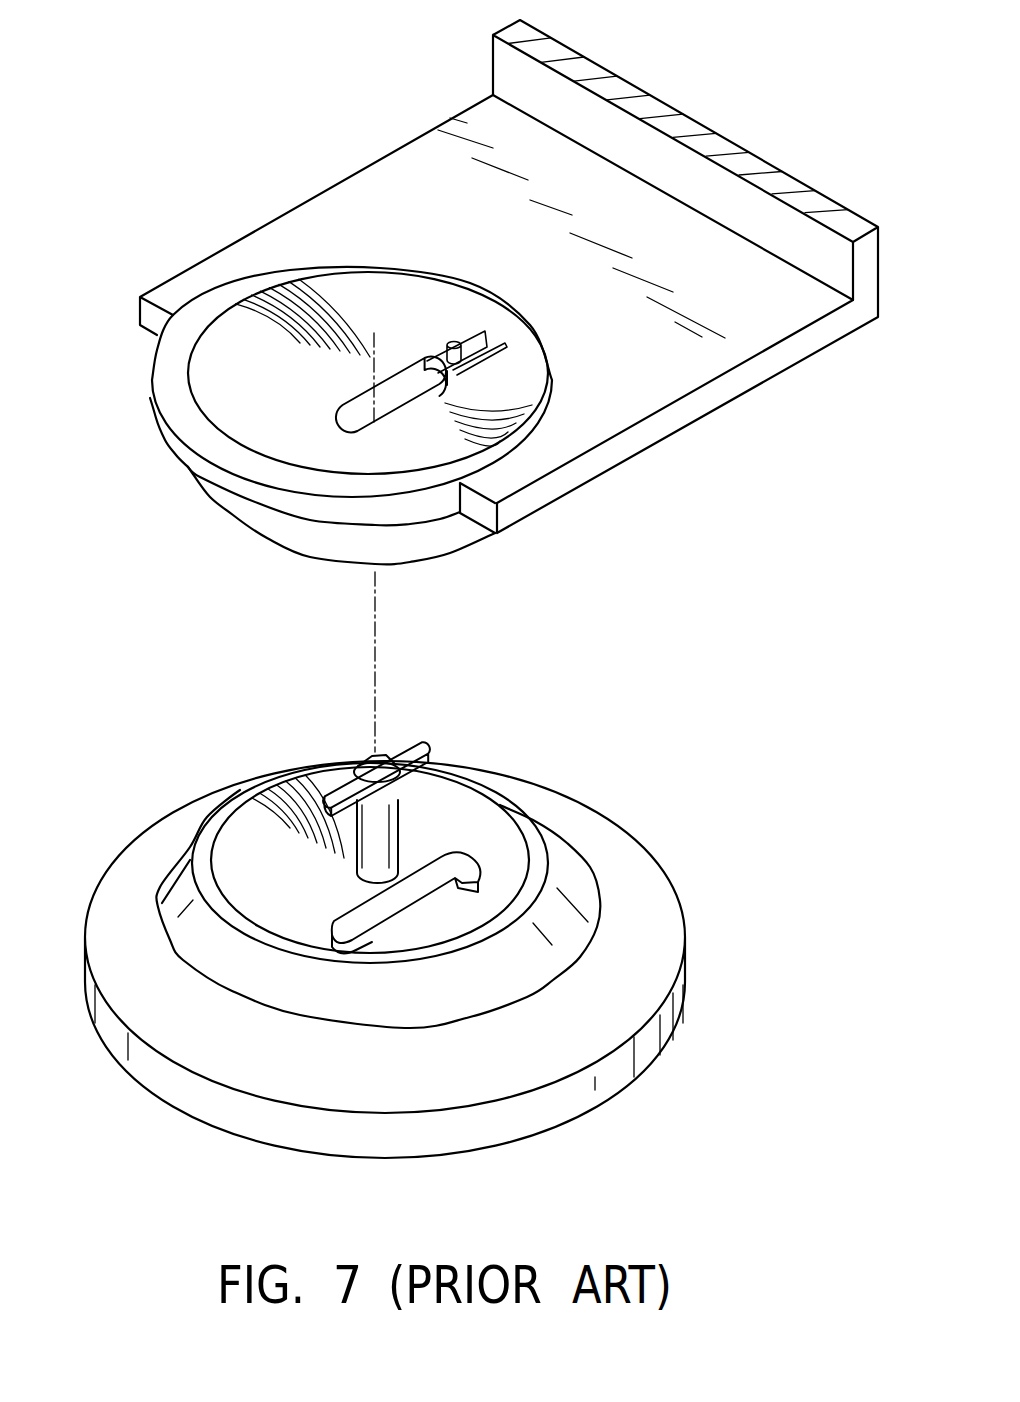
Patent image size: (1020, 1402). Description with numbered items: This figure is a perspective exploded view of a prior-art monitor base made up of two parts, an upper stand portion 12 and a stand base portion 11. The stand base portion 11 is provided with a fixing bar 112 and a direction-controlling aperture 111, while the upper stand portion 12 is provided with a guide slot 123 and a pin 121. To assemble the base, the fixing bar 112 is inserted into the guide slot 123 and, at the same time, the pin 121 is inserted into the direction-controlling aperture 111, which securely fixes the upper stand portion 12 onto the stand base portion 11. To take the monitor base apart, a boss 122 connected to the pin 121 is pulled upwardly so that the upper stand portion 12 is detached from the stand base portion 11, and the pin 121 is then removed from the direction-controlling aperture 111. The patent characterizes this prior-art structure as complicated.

The upper stand portion 12 is at (205, 245).
The guide slot 123 is at (405, 362).
The boss 122 is at (503, 345).
The pin 121 is at (440, 380).
The stand base portion 11 is at (150, 822).
The fixing bar 112 is at (377, 832).
The direction-controlling aperture 111 is at (421, 913).